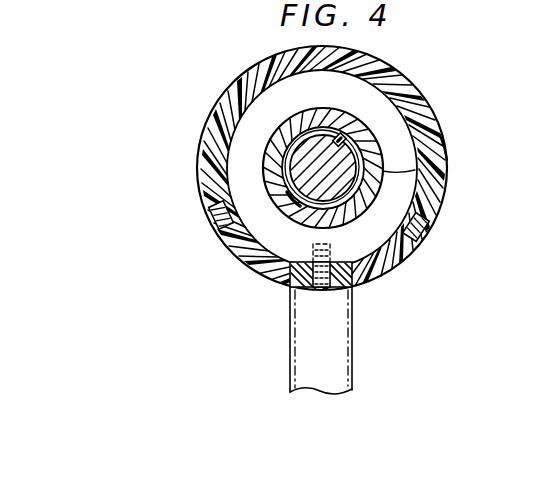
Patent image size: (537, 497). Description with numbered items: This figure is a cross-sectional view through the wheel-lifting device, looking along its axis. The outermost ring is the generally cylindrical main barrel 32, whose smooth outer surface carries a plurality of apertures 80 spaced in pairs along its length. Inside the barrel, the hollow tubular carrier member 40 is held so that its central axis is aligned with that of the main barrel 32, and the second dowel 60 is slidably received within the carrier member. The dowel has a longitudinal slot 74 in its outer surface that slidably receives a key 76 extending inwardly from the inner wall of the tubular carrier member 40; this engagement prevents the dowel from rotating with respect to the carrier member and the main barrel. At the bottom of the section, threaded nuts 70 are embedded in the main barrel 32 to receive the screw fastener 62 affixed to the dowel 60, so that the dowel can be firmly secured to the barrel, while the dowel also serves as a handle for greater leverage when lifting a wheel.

The main barrel 32 is at (207, 129).
The tubular carrier member 40 is at (263, 165).
The second dowel 60 is at (298, 132).
The screw fastener 62 is at (298, 278).
The threaded nuts 70 is at (352, 287).
The slot 74 is at (441, 147).
The key 76 is at (344, 138).
The apertures 80 is at (218, 230).